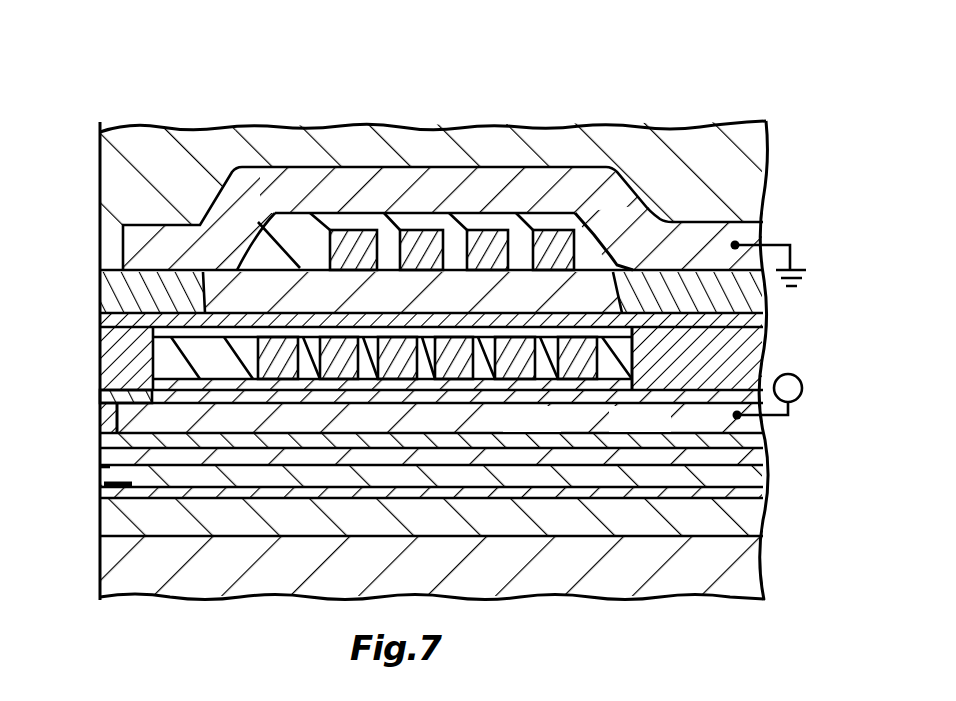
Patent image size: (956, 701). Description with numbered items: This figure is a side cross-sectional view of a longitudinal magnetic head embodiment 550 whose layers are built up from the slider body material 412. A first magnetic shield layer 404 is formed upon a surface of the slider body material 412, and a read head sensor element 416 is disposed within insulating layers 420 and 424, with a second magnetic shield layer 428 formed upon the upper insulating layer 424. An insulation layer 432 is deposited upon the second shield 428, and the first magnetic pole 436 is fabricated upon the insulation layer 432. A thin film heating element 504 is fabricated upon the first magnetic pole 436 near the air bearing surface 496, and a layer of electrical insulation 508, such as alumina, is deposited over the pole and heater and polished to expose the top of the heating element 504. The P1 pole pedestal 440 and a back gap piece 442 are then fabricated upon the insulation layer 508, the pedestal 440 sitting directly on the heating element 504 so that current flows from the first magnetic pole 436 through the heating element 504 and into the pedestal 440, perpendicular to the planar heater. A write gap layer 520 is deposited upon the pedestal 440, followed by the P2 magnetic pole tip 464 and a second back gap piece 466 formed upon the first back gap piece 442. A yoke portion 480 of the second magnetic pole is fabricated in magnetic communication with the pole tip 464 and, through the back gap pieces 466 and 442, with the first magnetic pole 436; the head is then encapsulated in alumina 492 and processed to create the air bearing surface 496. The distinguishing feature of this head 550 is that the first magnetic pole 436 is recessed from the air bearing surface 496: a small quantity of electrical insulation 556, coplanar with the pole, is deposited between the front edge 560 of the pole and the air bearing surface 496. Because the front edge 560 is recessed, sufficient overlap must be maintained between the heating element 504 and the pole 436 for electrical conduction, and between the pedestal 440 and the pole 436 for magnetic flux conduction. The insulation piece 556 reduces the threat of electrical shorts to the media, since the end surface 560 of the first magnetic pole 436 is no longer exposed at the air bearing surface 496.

The longitudinal magnetic head embodiment 550 is at (200, 110).
The yoke portion 480 is at (288, 183).
The alumina 492 is at (424, 142).
The air bearing surface 496 is at (103, 186).
The P2 magnetic pole tip 464 is at (103, 283).
The second back gap piece 466 is at (742, 306).
The write gap layer 520 is at (103, 320).
The P1 pole pedestal 440 is at (103, 356).
The back gap piece 442 is at (742, 356).
The thin film heating element 504 is at (103, 398).
The electrical insulation 556 is at (113, 420).
The front edge of the P1 pole 560 is at (103, 467).
The read head sensor element 416 is at (104, 486).
The first magnetic shield layer 404 is at (112, 523).
The slider body material 412 is at (112, 567).
The insulation layer 432 is at (492, 440).
The layer of electrical insulation 508 is at (607, 396).
The first magnetic pole 436 is at (745, 428).
The second magnetic shield layer 428 is at (751, 448).
The insulating layer 424 is at (742, 478).
The insulating layer 420 is at (763, 496).